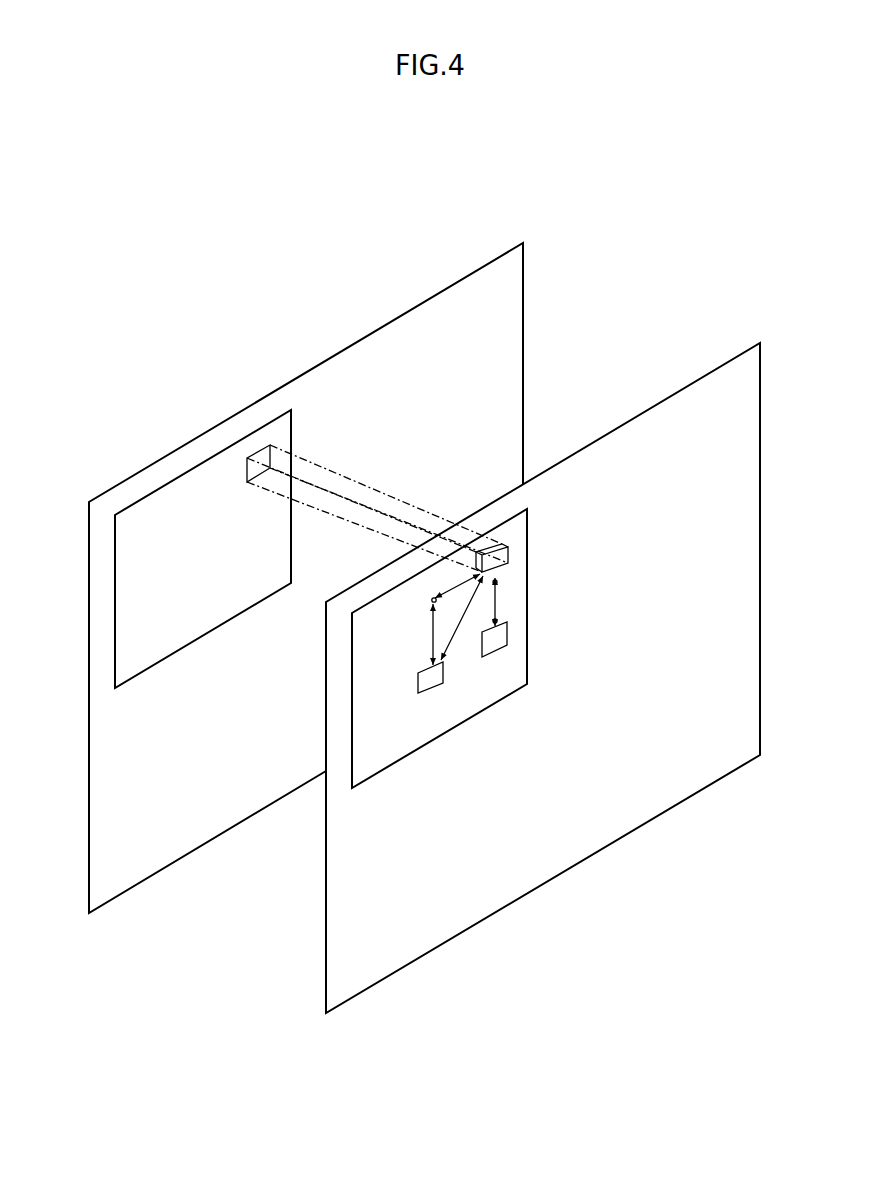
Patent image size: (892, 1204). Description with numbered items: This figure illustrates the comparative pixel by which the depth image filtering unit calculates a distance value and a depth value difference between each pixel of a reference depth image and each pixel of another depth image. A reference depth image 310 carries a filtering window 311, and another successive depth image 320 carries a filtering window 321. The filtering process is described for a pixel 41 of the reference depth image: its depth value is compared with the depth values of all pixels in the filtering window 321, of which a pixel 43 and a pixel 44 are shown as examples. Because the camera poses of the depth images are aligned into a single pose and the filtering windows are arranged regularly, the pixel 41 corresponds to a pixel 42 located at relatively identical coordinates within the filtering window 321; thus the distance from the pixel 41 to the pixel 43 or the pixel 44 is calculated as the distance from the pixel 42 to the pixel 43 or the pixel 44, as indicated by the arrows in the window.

The reference depth image 310 is at (469, 275).
The first filtering window 311 is at (292, 428).
The depth image 320 is at (707, 374).
The filtering window 321 is at (528, 530).
The pixel 41 is at (258, 452).
The pixel 42 is at (509, 554).
The pixel 43 is at (508, 634).
The pixel 44 is at (418, 680).